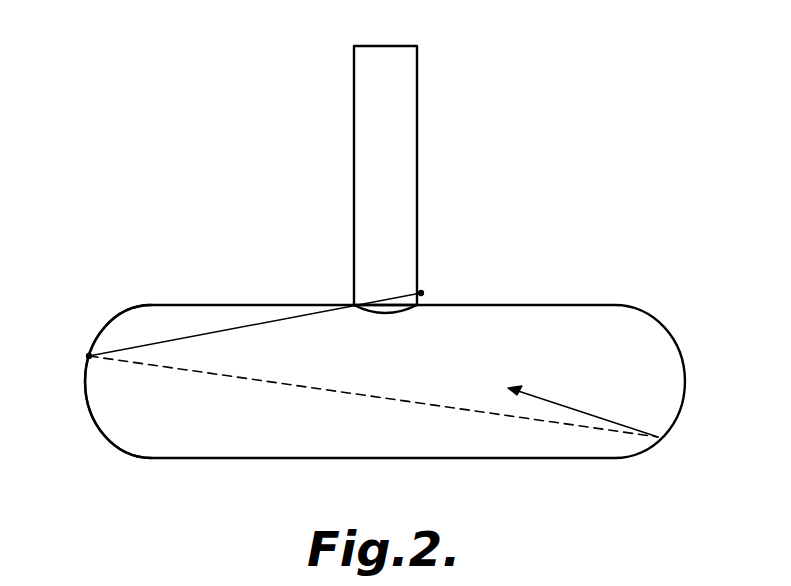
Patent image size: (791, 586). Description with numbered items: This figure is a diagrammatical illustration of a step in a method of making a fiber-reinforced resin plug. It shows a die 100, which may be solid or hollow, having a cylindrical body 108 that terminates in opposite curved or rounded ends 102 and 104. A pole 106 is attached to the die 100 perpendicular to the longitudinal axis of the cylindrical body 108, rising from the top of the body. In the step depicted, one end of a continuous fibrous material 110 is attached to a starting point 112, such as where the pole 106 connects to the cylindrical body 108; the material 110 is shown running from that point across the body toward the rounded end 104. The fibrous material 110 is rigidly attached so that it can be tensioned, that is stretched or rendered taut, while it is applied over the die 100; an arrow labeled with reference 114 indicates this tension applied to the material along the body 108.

The die 100 is at (320, 253).
The rounded end 102 is at (668, 330).
The rounded end 104 is at (92, 412).
The pole 106 is at (417, 142).
The cylindrical body 108 is at (406, 439).
The continuous fibrous material 110 is at (195, 335).
The starting point 112 is at (421, 293).
The tangent arrow T 114 is at (510, 393).